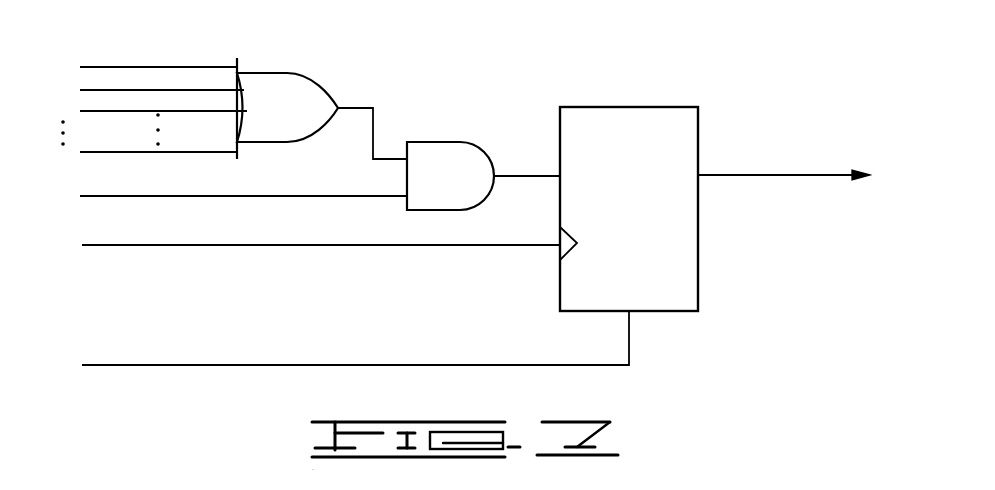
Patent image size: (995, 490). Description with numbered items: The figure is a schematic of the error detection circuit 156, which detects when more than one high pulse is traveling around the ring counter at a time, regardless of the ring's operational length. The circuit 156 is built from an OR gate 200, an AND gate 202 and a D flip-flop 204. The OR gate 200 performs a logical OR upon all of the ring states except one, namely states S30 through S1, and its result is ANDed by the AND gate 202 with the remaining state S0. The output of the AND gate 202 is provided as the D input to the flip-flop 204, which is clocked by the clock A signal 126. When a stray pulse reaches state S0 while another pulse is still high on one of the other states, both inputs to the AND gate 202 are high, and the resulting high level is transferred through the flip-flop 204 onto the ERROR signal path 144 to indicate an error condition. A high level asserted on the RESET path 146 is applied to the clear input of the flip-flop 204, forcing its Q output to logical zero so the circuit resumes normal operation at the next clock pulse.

The error detection circuit 156 is at (597, 57).
The OR gate 200 is at (298, 73).
The AND gate 202 is at (442, 142).
The D flip-flop 204 is at (699, 257).
The ERROR signal path 144 is at (738, 176).
The CLOCK A signal 126 is at (253, 245).
The RESET signal path 146 is at (257, 365).